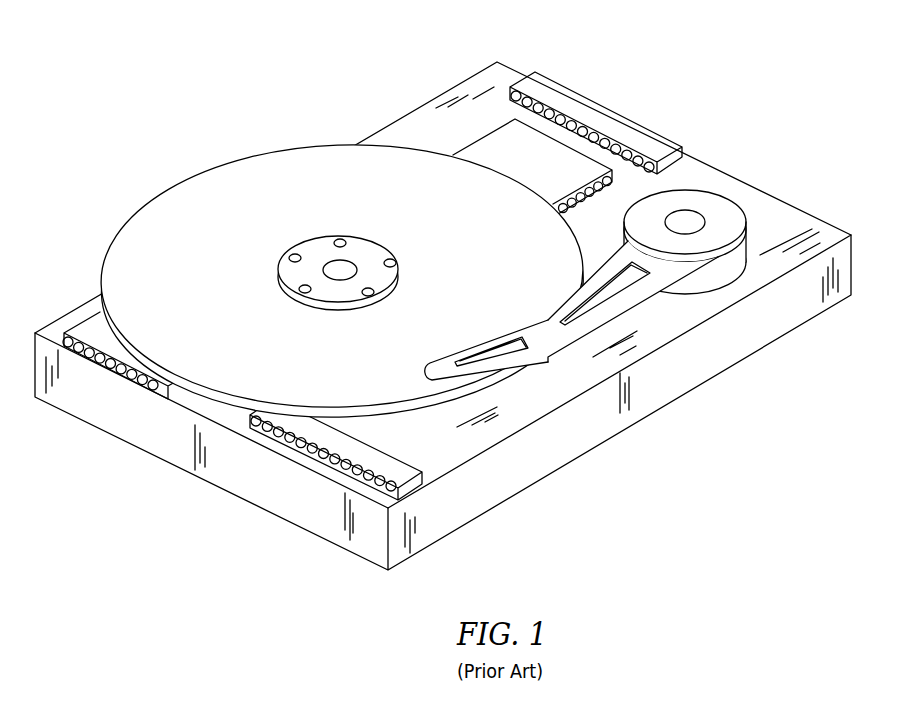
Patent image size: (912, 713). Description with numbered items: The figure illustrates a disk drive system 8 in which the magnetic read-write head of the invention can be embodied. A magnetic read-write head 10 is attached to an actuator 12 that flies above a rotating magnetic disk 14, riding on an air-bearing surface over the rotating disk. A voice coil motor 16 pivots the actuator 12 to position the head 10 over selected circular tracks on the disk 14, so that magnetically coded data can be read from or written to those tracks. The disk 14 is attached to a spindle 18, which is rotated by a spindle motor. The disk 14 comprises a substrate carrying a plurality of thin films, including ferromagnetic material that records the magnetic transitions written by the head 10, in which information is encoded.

The disk drive system 8 is at (690, 88).
The magnetic read-write head 10 is at (428, 372).
The actuator 12 is at (543, 330).
The magnetic disk 14 is at (205, 193).
The voice coil motor 16 is at (720, 207).
The spindle 18 is at (340, 267).